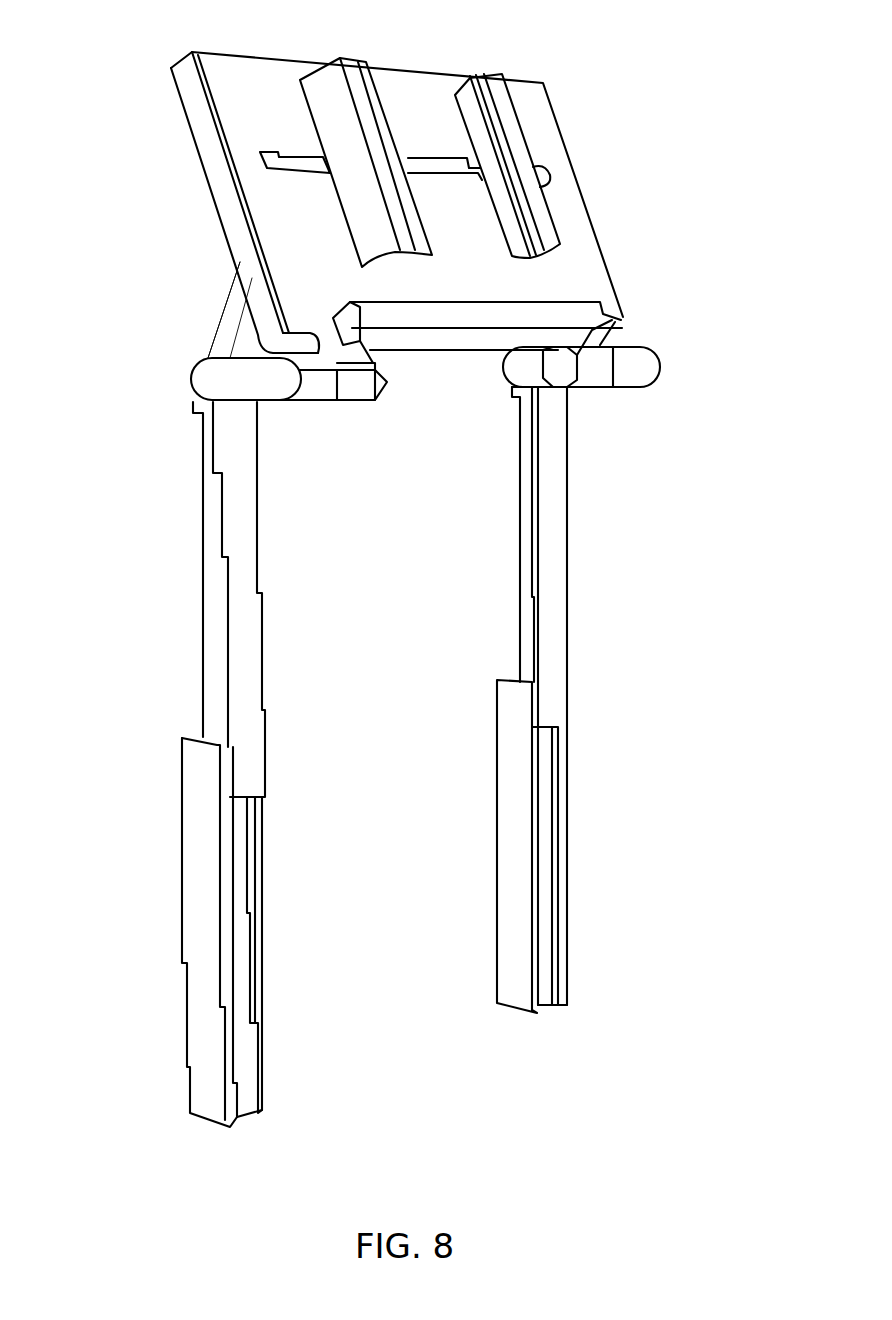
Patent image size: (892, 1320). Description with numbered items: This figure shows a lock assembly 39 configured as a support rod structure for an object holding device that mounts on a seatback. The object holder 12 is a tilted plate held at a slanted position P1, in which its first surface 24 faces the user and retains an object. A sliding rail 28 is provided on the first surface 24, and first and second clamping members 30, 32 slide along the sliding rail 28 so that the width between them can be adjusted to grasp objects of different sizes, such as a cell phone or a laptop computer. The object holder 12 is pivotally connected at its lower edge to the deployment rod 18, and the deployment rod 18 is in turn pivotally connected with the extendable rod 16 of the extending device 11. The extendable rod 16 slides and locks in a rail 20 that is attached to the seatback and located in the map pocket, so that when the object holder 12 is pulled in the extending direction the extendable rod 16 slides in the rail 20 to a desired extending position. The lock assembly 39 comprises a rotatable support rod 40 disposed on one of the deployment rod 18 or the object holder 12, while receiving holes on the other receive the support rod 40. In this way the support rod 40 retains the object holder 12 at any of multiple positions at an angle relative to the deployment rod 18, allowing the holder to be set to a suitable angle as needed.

The extending device 11 is at (203, 690).
The object holder 12 is at (588, 277).
The extendable rod 16 is at (230, 525).
The deployment rod 18 is at (287, 390).
The rail 20 is at (237, 940).
The first surface 24 is at (272, 218).
The sliding rail 28 is at (287, 154).
The first clamping member 30 is at (345, 100).
The second clamping member 32 is at (513, 137).
The lock assembly 39 is at (212, 307).
The support rod 40 is at (222, 336).
The slanted position P1 is at (168, 145).